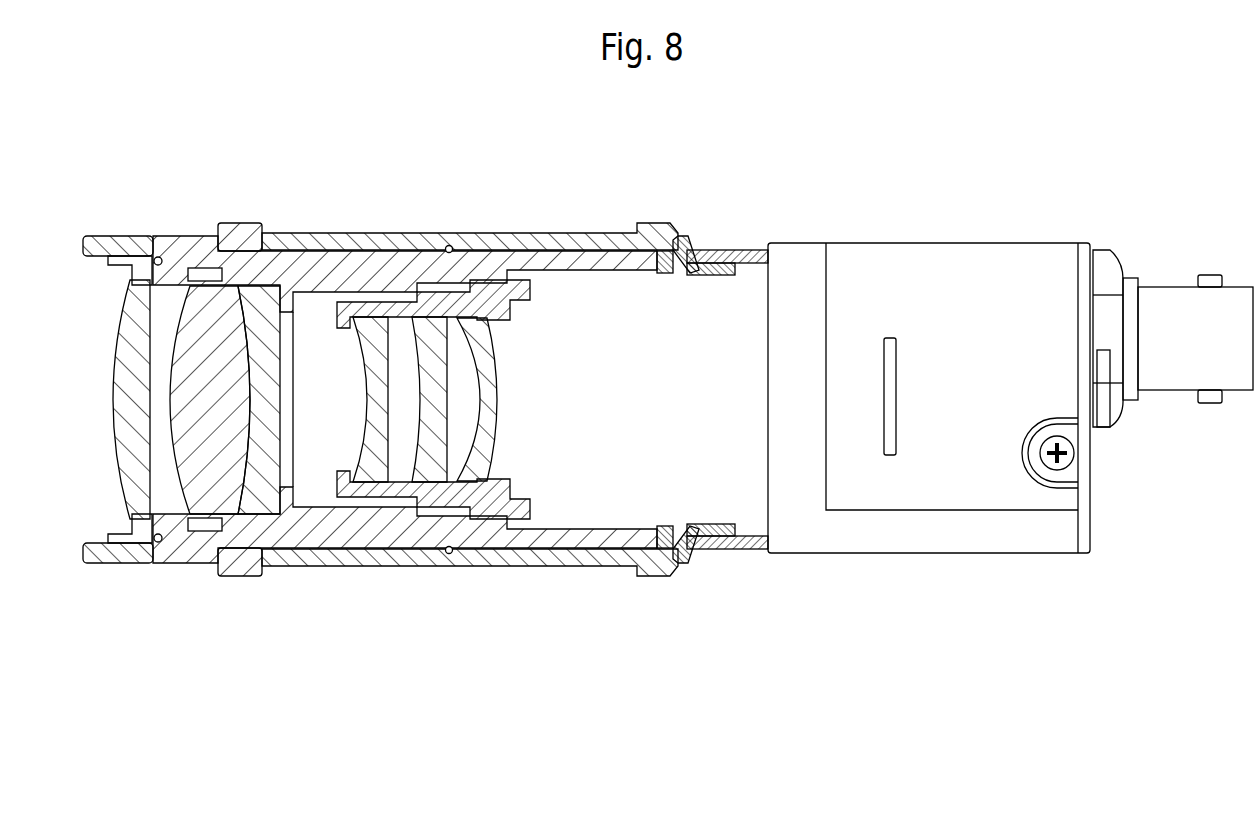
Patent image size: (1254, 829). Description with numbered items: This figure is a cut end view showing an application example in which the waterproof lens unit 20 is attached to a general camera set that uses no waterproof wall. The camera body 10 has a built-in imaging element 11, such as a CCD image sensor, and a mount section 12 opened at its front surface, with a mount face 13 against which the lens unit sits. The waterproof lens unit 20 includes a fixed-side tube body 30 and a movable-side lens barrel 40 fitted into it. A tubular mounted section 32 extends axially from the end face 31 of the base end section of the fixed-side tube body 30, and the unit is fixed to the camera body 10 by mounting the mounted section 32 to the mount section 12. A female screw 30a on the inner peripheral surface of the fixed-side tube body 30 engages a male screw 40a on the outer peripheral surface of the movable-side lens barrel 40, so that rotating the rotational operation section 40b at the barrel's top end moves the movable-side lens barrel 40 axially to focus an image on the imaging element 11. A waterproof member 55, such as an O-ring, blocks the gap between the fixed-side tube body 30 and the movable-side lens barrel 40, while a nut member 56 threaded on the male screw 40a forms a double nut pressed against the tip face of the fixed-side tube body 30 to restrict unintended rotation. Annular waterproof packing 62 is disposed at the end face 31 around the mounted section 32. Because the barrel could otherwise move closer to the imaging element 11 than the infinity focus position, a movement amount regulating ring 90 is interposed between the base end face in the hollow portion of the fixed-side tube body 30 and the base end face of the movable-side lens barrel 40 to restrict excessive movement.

The camera body 10 is at (950, 226).
The imaging element 11 is at (897, 420).
The mount section 12 is at (735, 250).
The mount face 13 is at (686, 250).
The waterproof lens unit 20 is at (294, 224).
The fixed-side tube body 30 is at (345, 233).
The female screw 30a is at (573, 549).
The end face 31 is at (700, 250).
The mounted section 32 is at (712, 276).
The movable-side lens barrel 40 is at (315, 549).
The male screw 40a is at (395, 549).
The rotational operation section 40b is at (174, 236).
The waterproof member 55 is at (449, 246).
The nut member 56 is at (235, 577).
The waterproof packing 62 is at (668, 530).
The movement amount regulating ring 90 is at (662, 274).